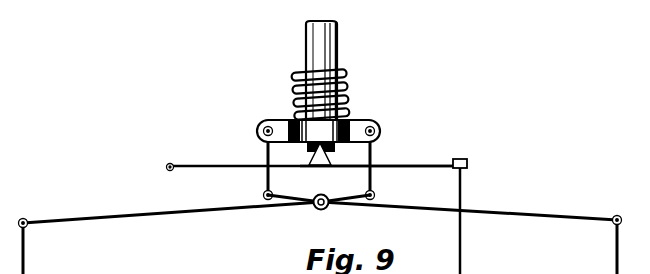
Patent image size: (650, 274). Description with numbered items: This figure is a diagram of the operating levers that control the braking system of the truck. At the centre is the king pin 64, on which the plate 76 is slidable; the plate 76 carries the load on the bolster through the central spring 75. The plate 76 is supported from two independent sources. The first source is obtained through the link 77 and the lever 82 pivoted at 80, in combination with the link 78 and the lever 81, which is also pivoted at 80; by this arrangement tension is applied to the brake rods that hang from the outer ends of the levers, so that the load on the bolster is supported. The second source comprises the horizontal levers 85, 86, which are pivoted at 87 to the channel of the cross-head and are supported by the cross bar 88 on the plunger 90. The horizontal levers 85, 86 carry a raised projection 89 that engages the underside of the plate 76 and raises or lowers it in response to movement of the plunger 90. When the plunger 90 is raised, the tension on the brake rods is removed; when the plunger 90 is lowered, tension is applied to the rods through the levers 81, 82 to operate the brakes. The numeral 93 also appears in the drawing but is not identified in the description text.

The king pin 64 is at (337, 36).
The central spring 75 is at (300, 74).
The plate 76 is at (292, 125).
The link 77 is at (267, 155).
The link 78 is at (375, 151).
The pivot 80 is at (316, 210).
The lever 81 is at (170, 233).
The lever 82 is at (471, 232).
The horizontal lever 85 is at (253, 168).
The horizontal lever 86 is at (339, 181).
The pivot 87 is at (174, 158).
The cross bar 88 is at (466, 158).
The raised projection 89 is at (326, 160).
The plunger 90 is at (462, 248).
The member 93 is at (256, 266).